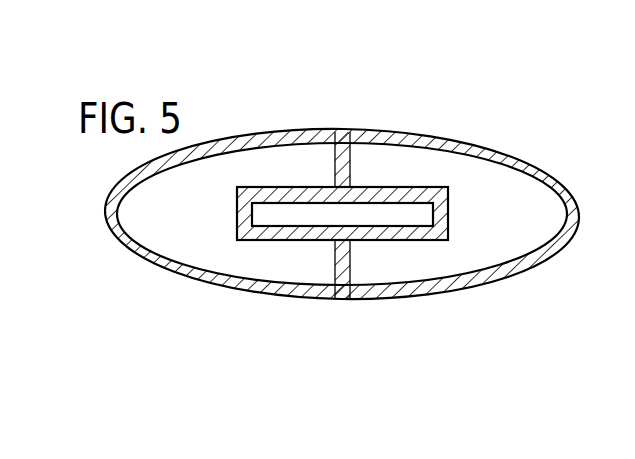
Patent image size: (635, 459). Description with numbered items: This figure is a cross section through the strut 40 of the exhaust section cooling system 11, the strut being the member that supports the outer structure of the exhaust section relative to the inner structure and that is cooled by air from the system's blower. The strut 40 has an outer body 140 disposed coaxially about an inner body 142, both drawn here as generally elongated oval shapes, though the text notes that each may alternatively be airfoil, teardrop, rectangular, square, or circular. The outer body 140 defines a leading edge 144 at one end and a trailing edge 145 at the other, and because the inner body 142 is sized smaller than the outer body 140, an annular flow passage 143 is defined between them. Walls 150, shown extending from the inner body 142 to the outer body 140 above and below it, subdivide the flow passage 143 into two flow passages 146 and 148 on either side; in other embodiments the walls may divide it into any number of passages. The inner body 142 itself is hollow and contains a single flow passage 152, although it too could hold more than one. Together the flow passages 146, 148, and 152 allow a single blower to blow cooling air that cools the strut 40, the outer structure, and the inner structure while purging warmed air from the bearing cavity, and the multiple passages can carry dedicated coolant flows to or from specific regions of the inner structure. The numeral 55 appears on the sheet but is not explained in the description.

The exhaust section cooling system 11 is at (342, 201).
The strut 40 is at (309, 247).
The housing wall 55 is at (9, 221).
The outer body 140 is at (342, 201).
The inner body 142 is at (339, 271).
The flow passage 143 is at (213, 265).
The leading edge 144 is at (110, 223).
The trailing edge 145 is at (580, 222).
The flow passage 146 is at (193, 228).
The flow passage 148 is at (533, 228).
The walls 150 is at (366, 142).
The flow passage 152 is at (412, 218).